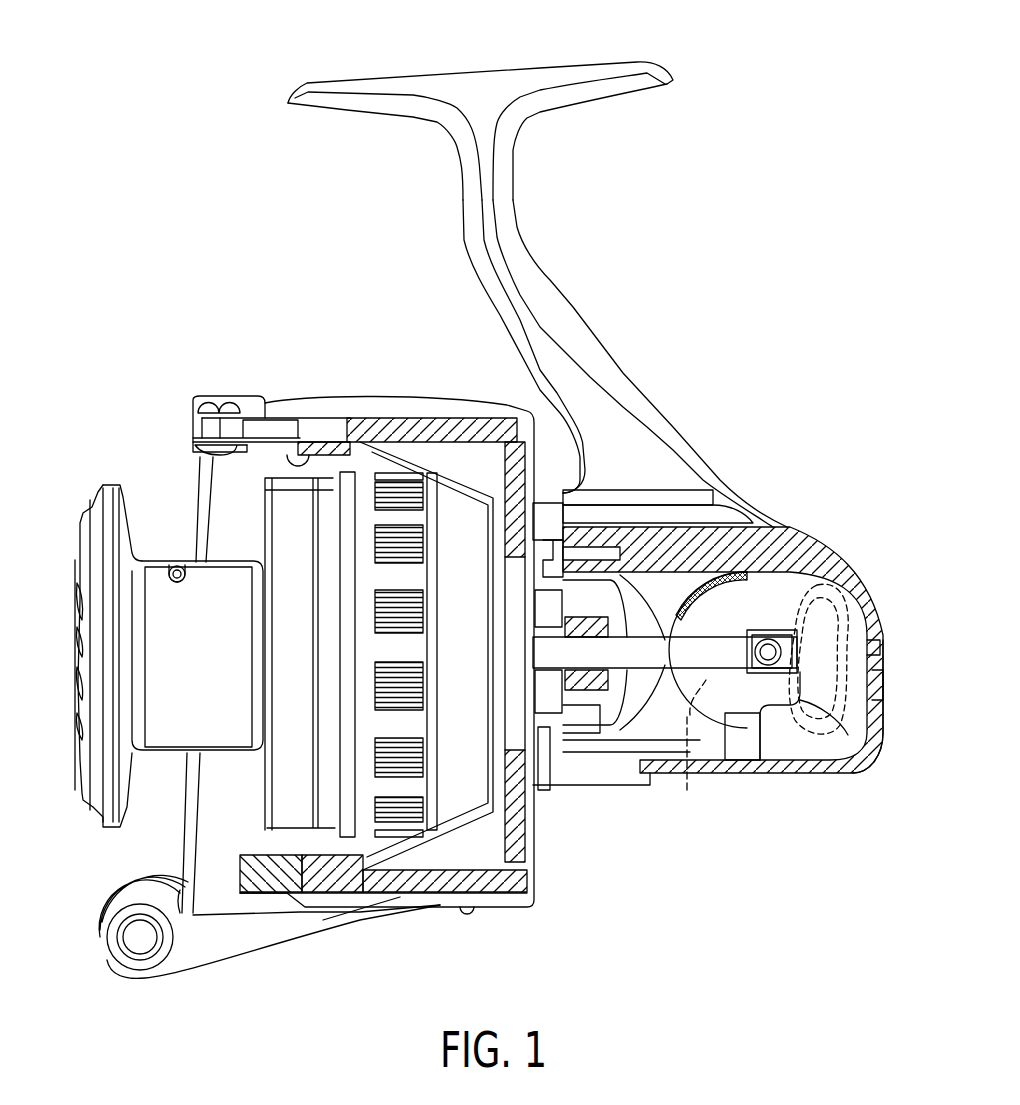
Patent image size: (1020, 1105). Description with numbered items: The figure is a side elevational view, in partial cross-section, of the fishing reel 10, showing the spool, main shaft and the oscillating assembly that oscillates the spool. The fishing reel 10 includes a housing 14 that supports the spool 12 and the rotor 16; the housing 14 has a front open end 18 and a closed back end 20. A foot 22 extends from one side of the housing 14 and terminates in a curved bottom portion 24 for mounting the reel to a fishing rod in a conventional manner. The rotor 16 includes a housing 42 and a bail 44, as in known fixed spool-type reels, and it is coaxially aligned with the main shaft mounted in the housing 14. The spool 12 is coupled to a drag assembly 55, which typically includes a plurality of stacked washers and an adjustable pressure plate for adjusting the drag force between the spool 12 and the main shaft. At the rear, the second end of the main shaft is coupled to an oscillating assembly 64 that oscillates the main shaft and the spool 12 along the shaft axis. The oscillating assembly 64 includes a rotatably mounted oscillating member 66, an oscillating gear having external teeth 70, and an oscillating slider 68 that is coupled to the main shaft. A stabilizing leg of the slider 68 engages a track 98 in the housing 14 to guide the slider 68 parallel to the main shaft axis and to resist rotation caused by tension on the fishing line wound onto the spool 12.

The fishing reel 10 is at (700, 168).
The spool 12 is at (112, 473).
The housing 14 is at (791, 523).
The rotor 16 is at (356, 388).
The front open end 18 is at (557, 492).
The closed back end 20 is at (885, 628).
The foot 22 is at (593, 100).
The curved bottom portion 24 is at (585, 63).
The housing 42 is at (345, 895).
The bail 44 is at (180, 823).
The drag assembly 55 is at (360, 470).
The oscillating assembly 64 is at (783, 582).
The oscillating member 66 is at (707, 705).
The oscillating slider 68 is at (780, 728).
The external teeth 70 is at (691, 749).
The track 98 is at (740, 750).